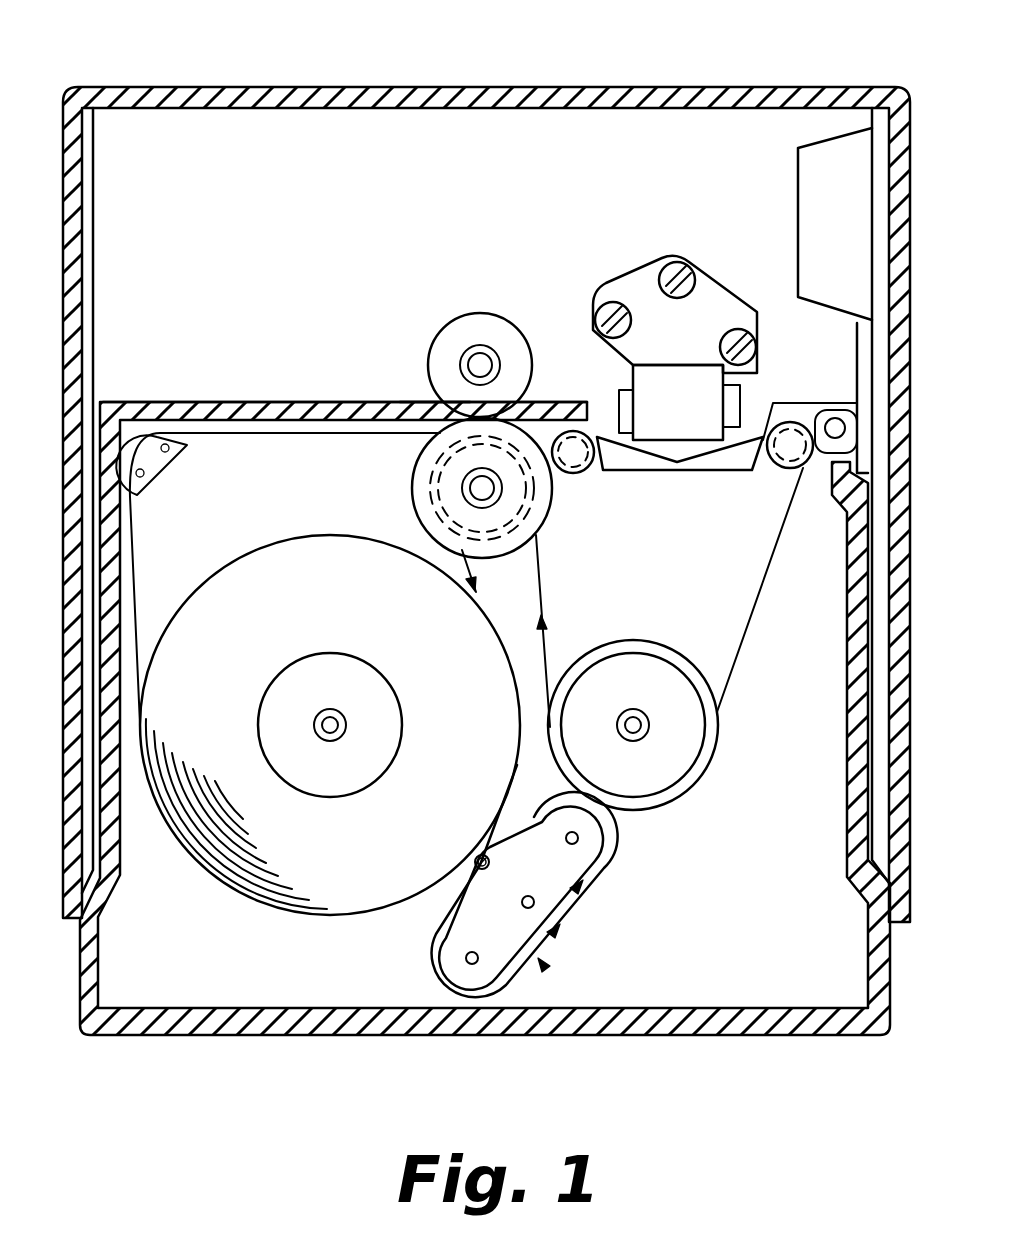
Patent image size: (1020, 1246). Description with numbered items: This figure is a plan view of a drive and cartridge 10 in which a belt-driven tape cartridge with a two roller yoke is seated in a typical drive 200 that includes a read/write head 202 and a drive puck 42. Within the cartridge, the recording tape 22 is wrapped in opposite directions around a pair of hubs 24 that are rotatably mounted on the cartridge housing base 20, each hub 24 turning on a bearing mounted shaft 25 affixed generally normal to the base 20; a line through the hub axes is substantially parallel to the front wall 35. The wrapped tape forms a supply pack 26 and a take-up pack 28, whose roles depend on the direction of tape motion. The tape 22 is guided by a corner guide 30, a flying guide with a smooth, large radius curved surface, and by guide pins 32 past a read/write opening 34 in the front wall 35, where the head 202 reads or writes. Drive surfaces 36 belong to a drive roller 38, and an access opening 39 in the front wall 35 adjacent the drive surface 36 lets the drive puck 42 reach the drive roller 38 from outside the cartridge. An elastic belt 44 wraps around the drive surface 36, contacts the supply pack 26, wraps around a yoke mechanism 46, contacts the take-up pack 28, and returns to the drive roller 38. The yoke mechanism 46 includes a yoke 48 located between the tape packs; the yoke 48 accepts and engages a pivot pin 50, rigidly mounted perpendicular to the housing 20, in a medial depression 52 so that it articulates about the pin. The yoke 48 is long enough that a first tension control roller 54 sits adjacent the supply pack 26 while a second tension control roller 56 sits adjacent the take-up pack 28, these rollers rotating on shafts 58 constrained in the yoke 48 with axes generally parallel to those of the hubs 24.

The drive 200 is at (500, 80).
The read/write head 202 is at (638, 290).
The drive and cartridge 10 is at (485, 666).
The cartridge housing base 20 is at (283, 981).
The recording tape 22 is at (277, 436).
The hub 24 is at (310, 778).
The bearing mounted shaft 25 is at (330, 712).
The supply pack 26 is at (225, 582).
The take-up pack 28 is at (698, 782).
The corner guide 30 is at (160, 478).
The guide pin 32 is at (572, 443).
The read/write opening 34 is at (580, 442).
The front wall 35 is at (190, 401).
The drive surface 36 is at (418, 504).
The drive roller 38 is at (540, 498).
The access opening 39 is at (430, 398).
The drive puck 42 is at (448, 340).
The elastic belt 44 is at (541, 589).
The yoke mechanism 46 is at (540, 962).
The yoke 48 is at (462, 932).
The pivot pin 50 is at (473, 860).
The medial depression 52 is at (477, 853).
The first tension control roller 54 is at (469, 964).
The second tension control roller 56 is at (600, 870).
The shaft 58 is at (578, 840).